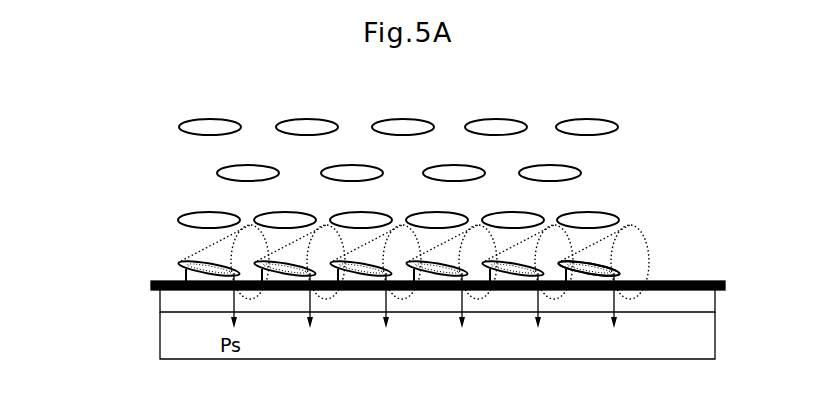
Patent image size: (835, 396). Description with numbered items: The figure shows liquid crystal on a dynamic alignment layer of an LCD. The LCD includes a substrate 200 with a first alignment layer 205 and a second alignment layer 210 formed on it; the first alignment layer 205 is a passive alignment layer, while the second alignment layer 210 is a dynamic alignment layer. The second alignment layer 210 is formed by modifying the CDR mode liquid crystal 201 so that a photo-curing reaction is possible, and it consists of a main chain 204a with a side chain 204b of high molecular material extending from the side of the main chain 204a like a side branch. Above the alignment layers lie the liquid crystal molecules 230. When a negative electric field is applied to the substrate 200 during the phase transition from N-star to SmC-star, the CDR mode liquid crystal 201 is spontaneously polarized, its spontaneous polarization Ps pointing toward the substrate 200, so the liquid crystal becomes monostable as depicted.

The liquid crystal molecules 230 is at (615, 128).
The CDR mode liquid crystal 201 is at (600, 266).
The second alignment layer 210 is at (367, 270).
The side chain 204b is at (178, 264).
The main chain 204a is at (152, 284).
The first alignment layer 205 is at (705, 307).
The substrate 200 is at (703, 340).